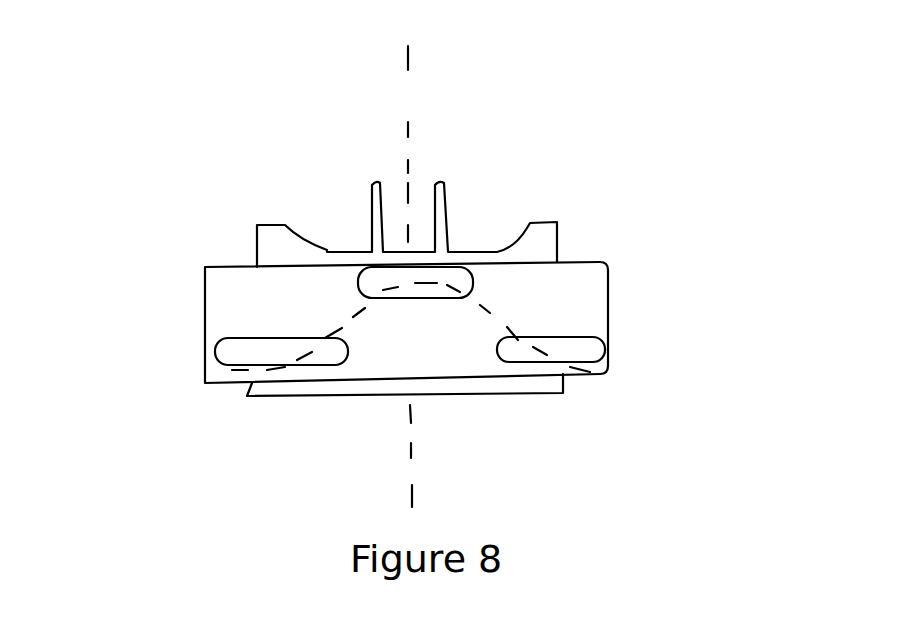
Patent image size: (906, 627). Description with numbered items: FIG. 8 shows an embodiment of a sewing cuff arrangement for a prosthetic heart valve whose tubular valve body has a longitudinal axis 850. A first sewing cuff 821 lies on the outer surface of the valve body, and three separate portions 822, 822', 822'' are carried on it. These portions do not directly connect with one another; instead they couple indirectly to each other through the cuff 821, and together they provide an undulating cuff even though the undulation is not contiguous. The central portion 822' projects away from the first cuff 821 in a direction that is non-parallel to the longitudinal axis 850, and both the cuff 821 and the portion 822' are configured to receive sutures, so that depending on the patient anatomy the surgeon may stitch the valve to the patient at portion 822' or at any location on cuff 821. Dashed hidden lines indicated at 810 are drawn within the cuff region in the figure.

The cuff 821 is at (247, 285).
The longitudinal axis 850 is at (403, 102).
The cuff portion 822' is at (477, 204).
The cuff portion 822 is at (201, 388).
The cuff portion 822'' is at (638, 318).
The hidden coupling lines 810 is at (496, 308).